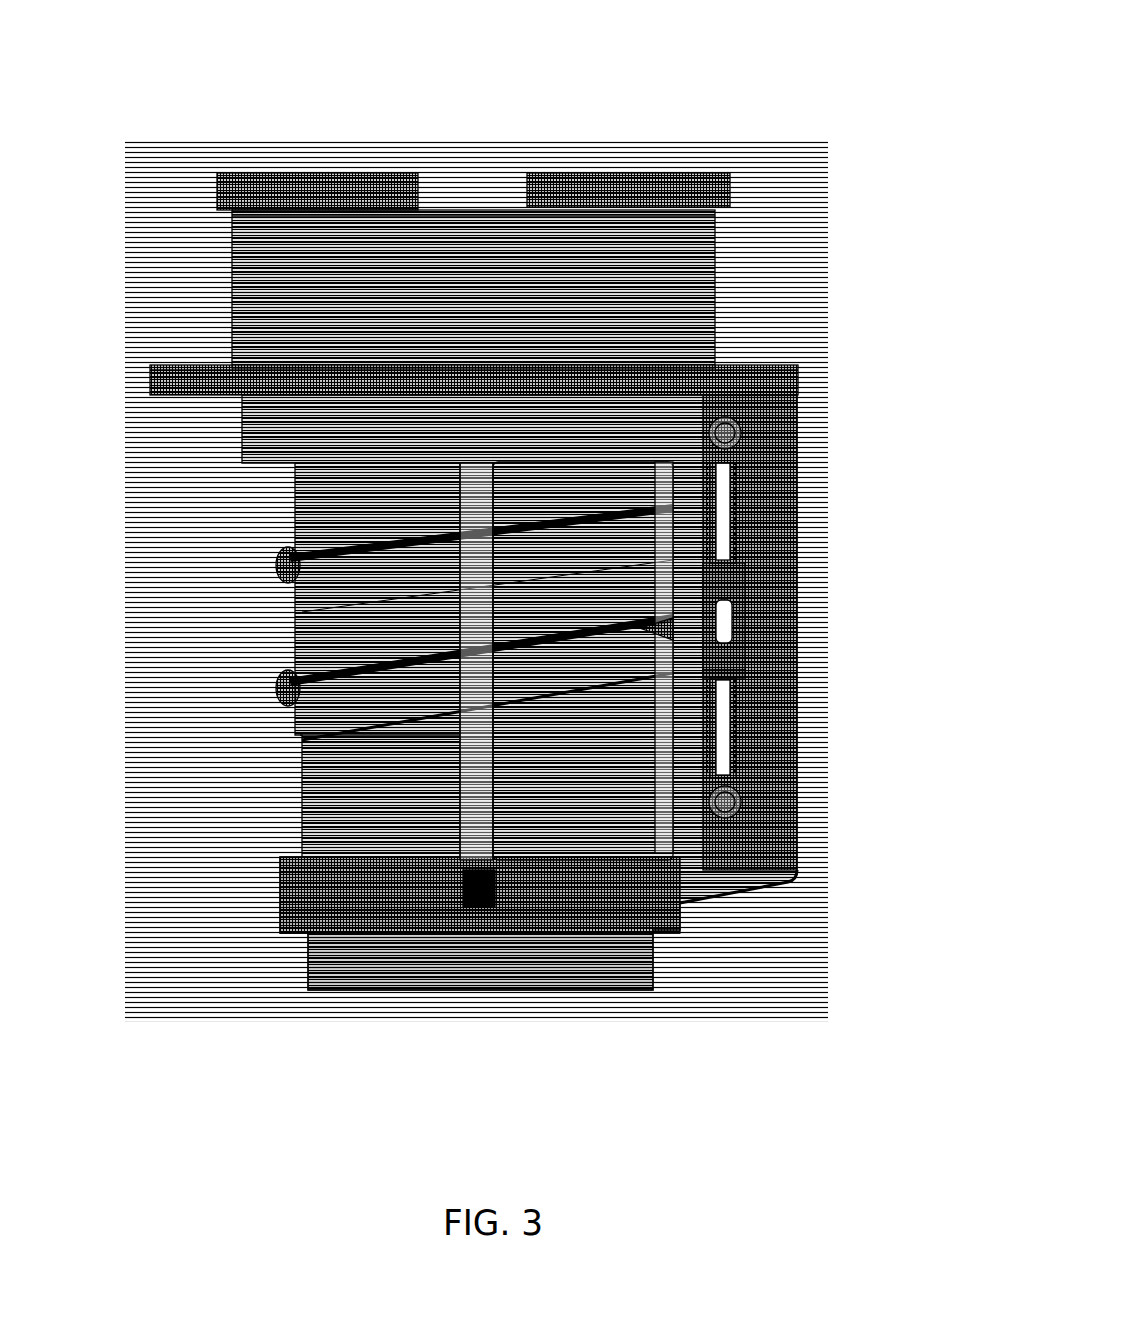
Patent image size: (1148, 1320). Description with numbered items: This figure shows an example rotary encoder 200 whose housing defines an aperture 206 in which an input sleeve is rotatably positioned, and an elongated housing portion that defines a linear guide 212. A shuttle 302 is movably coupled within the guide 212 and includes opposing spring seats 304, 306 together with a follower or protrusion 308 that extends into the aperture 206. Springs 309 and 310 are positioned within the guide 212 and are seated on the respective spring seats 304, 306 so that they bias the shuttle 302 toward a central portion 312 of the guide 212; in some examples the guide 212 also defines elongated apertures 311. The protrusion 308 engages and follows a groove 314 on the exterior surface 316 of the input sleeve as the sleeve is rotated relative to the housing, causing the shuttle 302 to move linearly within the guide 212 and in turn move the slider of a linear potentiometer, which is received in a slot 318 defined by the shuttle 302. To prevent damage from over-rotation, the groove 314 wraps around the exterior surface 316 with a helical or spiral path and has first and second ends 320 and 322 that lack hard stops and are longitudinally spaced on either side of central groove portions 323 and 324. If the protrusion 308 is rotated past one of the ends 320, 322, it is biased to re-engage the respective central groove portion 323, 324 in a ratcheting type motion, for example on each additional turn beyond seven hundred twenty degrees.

The rotary encoder 200 is at (778, 50).
The aperture 206 is at (660, 835).
The linear guide 212 is at (725, 517).
The shuttle 302 is at (733, 600).
The spring seat 304 is at (733, 570).
The spring seat 306 is at (733, 673).
The protrusion 308 is at (670, 635).
The spring 309 is at (740, 537).
The spring 310 is at (740, 727).
The elongated apertures 311 is at (725, 483).
The central portion 312 is at (697, 580).
The groove 314 is at (282, 566).
The exterior surface 316 is at (320, 825).
The slot 318 is at (733, 627).
The first end 320 is at (300, 735).
The second end 322 is at (296, 518).
The central groove portion 323 is at (355, 647).
The central groove portion 324 is at (310, 535).